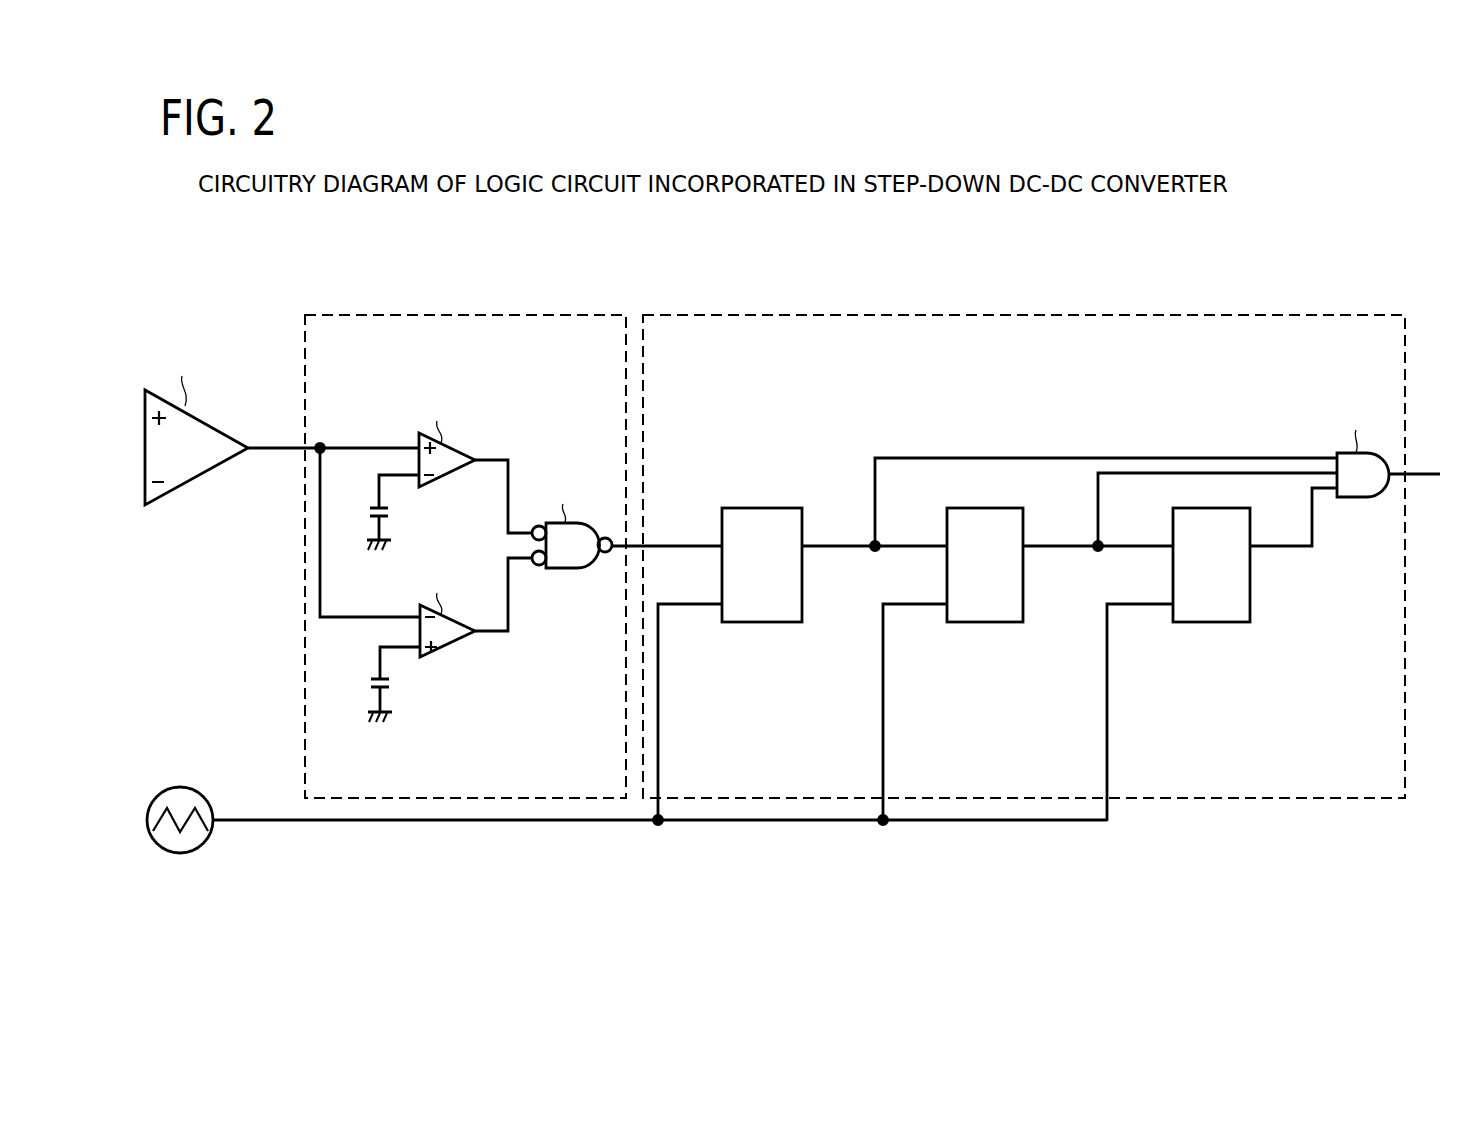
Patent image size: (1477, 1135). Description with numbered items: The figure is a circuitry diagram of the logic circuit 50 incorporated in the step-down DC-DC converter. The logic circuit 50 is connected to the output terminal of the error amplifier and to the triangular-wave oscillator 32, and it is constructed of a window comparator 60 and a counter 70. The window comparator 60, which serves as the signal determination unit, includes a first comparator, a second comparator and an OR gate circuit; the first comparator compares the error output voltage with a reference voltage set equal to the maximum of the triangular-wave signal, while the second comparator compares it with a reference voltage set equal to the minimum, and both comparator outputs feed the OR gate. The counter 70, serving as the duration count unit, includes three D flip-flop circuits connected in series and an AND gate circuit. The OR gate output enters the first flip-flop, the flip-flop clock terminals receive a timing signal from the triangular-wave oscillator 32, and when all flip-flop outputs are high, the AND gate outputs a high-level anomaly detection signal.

The triangular-wave oscillator 32 is at (184, 787).
The logic circuit 50 is at (1263, 265).
The window comparator 60 is at (586, 315).
The counter 70 is at (1052, 316).